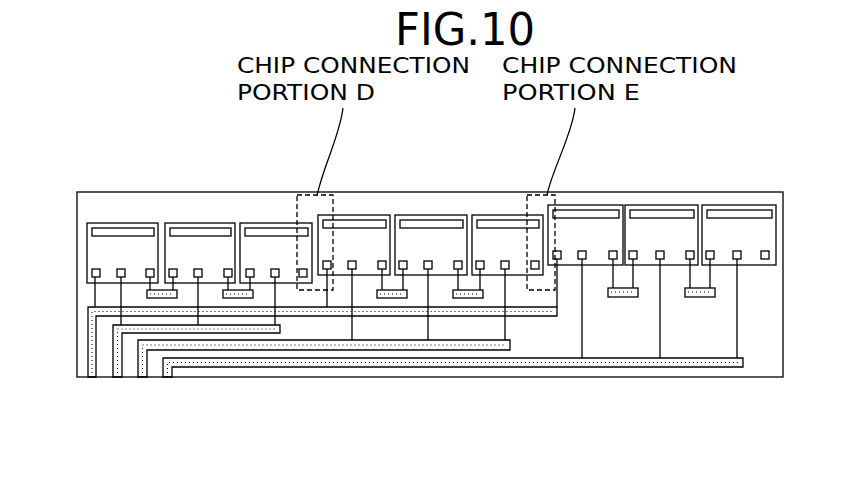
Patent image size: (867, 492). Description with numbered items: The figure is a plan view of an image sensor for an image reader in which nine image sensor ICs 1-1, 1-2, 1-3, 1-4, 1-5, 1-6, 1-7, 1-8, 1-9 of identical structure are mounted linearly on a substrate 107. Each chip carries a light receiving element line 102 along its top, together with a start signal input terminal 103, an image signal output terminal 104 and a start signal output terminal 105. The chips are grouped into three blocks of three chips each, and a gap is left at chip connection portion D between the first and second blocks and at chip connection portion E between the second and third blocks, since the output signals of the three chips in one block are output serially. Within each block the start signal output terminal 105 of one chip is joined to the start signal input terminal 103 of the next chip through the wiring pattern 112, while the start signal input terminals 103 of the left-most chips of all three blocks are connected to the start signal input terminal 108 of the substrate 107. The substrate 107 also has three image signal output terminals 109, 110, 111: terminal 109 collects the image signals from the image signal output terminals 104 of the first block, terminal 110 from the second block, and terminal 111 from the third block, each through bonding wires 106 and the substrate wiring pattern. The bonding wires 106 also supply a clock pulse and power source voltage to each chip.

The image sensor IC 1-1 is at (125, 203).
The image sensor IC 1-2 is at (210, 222).
The image sensor IC 1-3 is at (263, 223).
The image sensor IC 1-4 is at (355, 215).
The image sensor IC 1-5 is at (412, 215).
The image sensor IC 1-6 is at (492, 215).
The image sensor IC 1-7 is at (585, 205).
The image sensor IC 1-8 is at (655, 205).
The image sensor IC 1-9 is at (733, 205).
The light receiving element line 102 is at (103, 230).
The start signal input terminal 103 is at (92, 270).
The image signal output terminal 104 is at (121, 267).
The start signal output terminal 105 is at (150, 267).
The bonding wire 106 is at (583, 333).
The substrate 107 is at (465, 200).
The start signal input terminal of the substrate 108 is at (93, 377).
The image signal output terminal 109 is at (118, 377).
The image signal output terminal 110 is at (143, 377).
The image signal output terminal 111 is at (168, 377).
The wiring pattern 112 is at (412, 358).